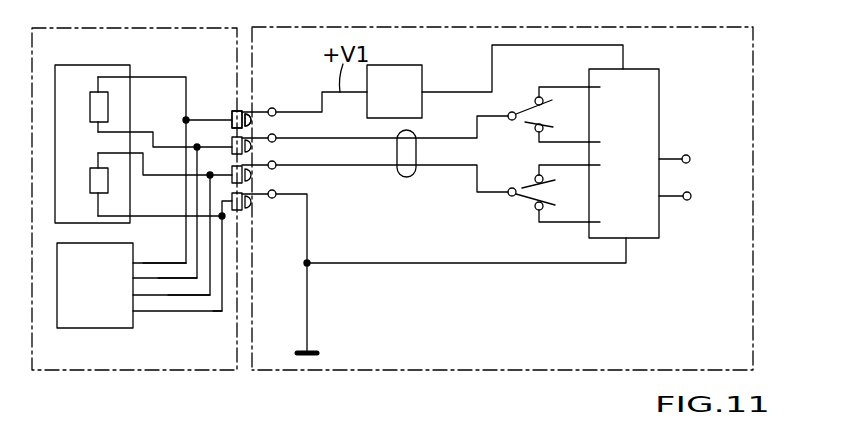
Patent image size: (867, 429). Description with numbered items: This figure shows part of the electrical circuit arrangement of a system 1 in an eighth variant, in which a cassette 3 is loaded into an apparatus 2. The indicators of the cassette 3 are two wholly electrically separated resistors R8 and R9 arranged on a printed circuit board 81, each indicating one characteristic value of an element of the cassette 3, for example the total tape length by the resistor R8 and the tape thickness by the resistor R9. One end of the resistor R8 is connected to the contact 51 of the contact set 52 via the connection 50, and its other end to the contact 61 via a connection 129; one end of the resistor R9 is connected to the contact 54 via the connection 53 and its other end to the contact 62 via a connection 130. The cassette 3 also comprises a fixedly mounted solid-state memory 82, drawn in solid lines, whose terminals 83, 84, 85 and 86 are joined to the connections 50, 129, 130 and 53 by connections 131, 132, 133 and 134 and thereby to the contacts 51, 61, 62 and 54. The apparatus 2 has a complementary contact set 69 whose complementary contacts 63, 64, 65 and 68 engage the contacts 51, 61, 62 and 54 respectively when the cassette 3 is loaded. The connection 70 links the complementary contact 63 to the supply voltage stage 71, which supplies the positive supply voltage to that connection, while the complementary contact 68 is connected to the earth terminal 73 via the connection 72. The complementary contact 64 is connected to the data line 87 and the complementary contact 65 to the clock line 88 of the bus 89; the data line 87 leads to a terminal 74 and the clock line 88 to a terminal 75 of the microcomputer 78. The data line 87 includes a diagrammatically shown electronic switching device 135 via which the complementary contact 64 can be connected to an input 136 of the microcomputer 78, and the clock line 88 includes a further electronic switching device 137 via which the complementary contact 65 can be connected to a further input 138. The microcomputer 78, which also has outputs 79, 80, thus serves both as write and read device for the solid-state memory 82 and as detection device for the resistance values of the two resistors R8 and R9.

The cassette 3 is at (128, 27).
The system 1 is at (241, 22).
The apparatus 2 is at (516, 26).
The printed circuit board 81 is at (90, 73).
The resistor R8 is at (90, 108).
The connection 50 is at (153, 77).
The contact set 52 is at (233, 106).
The connection 129 is at (140, 132).
The contact 51 is at (232, 114).
The contact 61 is at (232, 141).
The contact 62 is at (232, 170).
The contact 54 is at (232, 198).
The connection 130 is at (143, 167).
The resistor R9 is at (92, 178).
The connection 53 is at (137, 218).
The solid-state memory 82 is at (77, 322).
The terminal 83 is at (133, 262).
The terminal 84 is at (130, 278).
The terminal 85 is at (130, 293).
The terminal 86 is at (133, 311).
The connection 131 is at (143, 264).
The connection 132 is at (158, 279).
The connection 133 is at (168, 296).
The connection 134 is at (213, 312).
The complementary contact set 69 is at (258, 103).
The complementary contact 63 is at (255, 120).
The complementary contact 64 is at (255, 146).
The complementary contact 65 is at (255, 175).
The complementary contact 68 is at (257, 202).
The connection 70 is at (322, 103).
The supply voltage stage 71 is at (398, 73).
The data line 87 is at (473, 128).
The clock line 88 is at (477, 182).
The bus 89 is at (417, 153).
The electronic switching device 135 is at (523, 106).
The further electronic switching device 137 is at (527, 204).
The microcomputer 78 is at (648, 232).
The terminal 74 is at (592, 85).
The input 136 is at (592, 143).
The further input 138 is at (592, 164).
The terminal 75 is at (592, 223).
The output terminal 79 is at (689, 155).
The output terminal 80 is at (691, 193).
The connection 72 is at (308, 240).
The earth terminal 73 is at (308, 340).